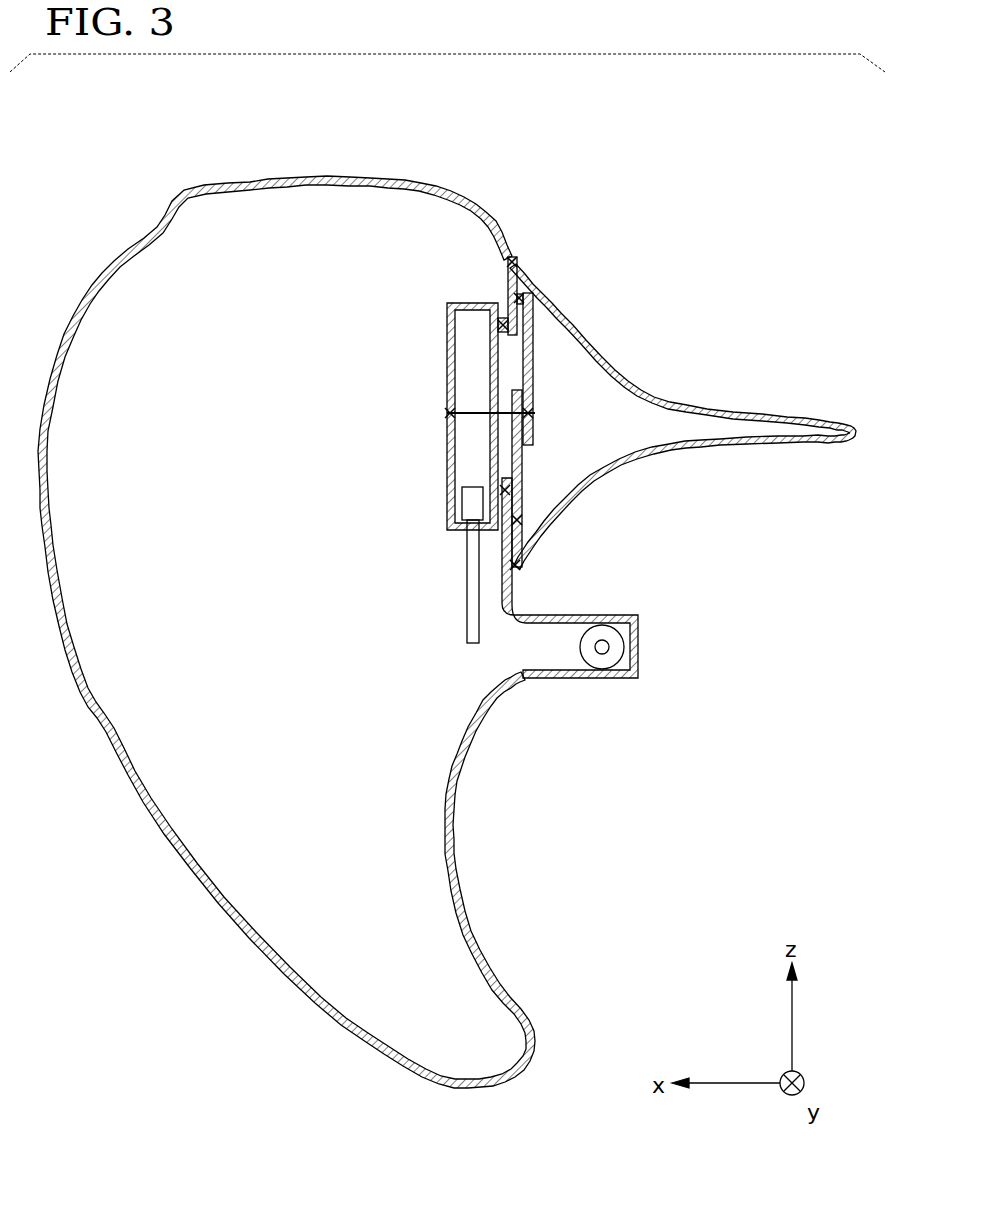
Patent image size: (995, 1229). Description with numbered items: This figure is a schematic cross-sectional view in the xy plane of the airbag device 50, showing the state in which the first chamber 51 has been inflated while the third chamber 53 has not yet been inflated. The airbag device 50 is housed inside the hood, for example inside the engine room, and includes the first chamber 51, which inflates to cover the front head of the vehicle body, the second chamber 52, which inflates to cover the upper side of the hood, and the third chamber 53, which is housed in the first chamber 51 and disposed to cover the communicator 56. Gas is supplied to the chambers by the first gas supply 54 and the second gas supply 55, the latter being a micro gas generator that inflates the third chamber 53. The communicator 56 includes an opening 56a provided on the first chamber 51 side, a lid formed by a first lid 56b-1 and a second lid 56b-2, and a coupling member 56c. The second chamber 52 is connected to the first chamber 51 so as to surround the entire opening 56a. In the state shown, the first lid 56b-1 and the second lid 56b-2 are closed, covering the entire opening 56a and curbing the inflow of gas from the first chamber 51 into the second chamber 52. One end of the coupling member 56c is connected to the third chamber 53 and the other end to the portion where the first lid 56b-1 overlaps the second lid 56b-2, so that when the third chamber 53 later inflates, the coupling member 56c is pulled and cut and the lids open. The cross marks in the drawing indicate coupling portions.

The airbag device 50 is at (160, 163).
The first chamber 51 is at (471, 197).
The second chamber 52 is at (776, 441).
The third chamber 53 is at (447, 477).
The first gas supply 54 is at (640, 648).
The second gas supply 55 is at (467, 596).
The communicator 56 is at (566, 398).
The opening 56a is at (512, 345).
The first lid 56b-1 is at (532, 366).
The second lid 56b-2 is at (521, 492).
The coupling member 56c is at (478, 413).